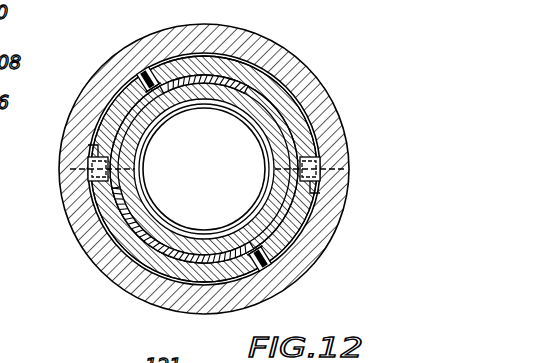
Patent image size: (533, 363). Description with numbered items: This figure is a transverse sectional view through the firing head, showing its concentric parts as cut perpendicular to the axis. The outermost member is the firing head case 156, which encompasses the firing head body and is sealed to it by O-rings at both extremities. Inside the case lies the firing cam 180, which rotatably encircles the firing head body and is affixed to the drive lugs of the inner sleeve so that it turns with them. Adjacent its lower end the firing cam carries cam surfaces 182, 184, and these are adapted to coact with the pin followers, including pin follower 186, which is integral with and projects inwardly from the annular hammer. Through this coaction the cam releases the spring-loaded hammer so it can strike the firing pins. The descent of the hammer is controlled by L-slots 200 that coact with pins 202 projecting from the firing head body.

The firing head case 156 is at (320, 228).
The firing cam 180 is at (275, 110).
The cam surface 182 is at (133, 74).
The cam surface 184 is at (247, 83).
The pin follower 186 is at (147, 70).
The L-slot 200 is at (98, 144).
The pin 202 is at (92, 168).